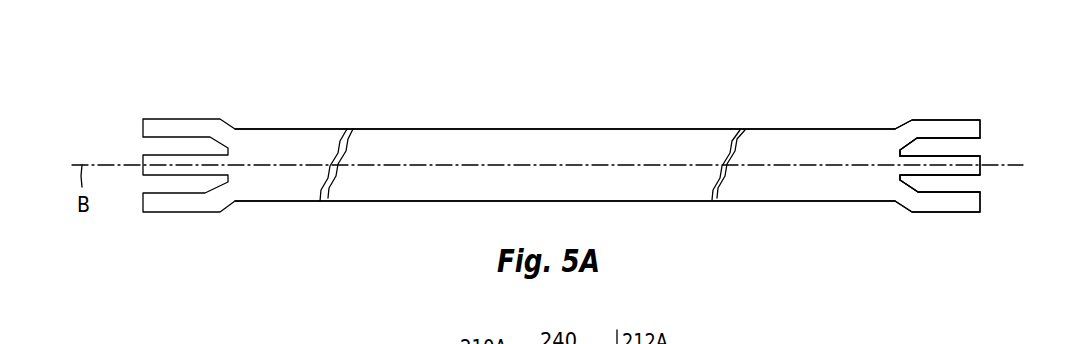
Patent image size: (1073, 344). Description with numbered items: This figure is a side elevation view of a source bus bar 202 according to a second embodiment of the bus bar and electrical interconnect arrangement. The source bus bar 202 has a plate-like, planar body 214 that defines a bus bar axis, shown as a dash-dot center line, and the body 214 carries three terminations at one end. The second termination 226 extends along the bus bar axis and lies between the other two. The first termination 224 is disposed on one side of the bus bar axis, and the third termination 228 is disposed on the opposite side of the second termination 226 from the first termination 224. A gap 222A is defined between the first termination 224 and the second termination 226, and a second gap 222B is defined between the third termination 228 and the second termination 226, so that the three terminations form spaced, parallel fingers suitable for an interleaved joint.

The source bus bar 202 is at (753, 88).
The body 214 is at (492, 190).
The gap 222A is at (990, 140).
The gap 222B is at (982, 185).
The first termination 224 is at (955, 125).
The second termination 226 is at (947, 168).
The third termination 228 is at (970, 205).